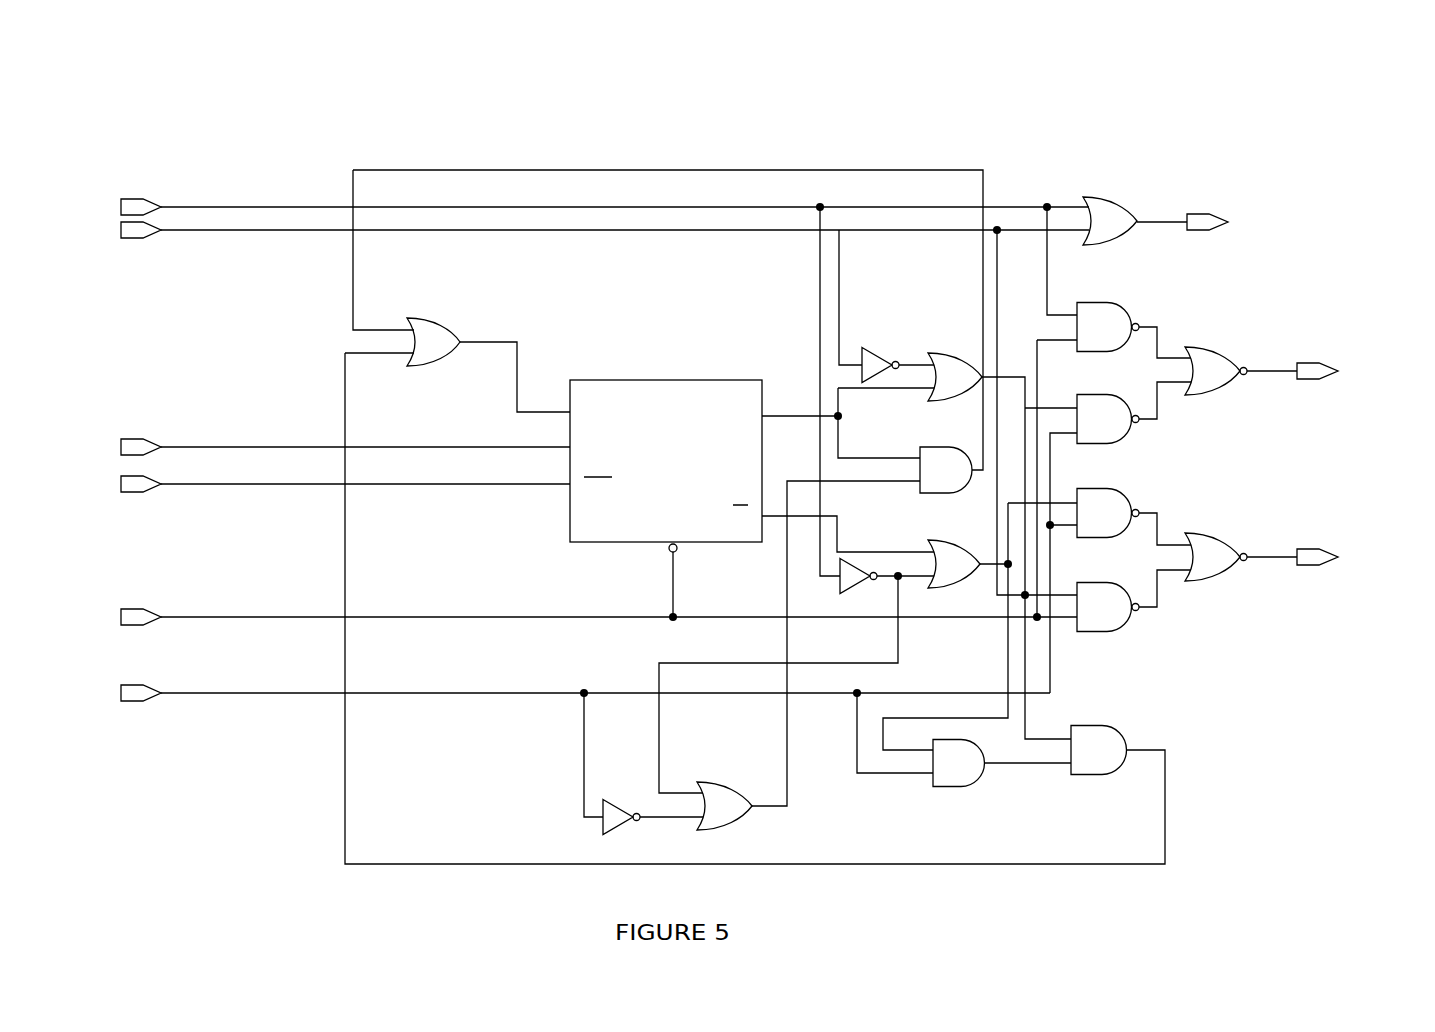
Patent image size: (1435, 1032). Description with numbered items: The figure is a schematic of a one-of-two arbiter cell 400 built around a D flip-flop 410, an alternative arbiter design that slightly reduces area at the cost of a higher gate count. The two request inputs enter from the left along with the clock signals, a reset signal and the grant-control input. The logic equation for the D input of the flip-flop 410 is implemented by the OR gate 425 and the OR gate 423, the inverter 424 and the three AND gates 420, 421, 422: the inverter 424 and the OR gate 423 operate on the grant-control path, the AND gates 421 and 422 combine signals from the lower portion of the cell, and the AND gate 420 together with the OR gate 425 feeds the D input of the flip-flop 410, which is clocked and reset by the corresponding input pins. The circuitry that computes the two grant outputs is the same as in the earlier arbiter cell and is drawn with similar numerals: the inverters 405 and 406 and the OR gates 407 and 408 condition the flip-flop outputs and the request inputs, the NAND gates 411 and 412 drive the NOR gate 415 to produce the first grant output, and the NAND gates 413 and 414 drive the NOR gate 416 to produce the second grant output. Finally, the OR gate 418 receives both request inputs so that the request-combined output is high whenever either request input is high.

The one-of-two arbiter cell 400 is at (936, 87).
The inverter 405 is at (861, 350).
The inverter 406 is at (845, 582).
The OR gate 407 is at (953, 365).
The OR gate 408 is at (934, 547).
The D flip-flop 410 is at (652, 494).
The NAND gate 411 is at (1103, 313).
The NAND gate 412 is at (1108, 428).
The NAND gate 413 is at (1113, 505).
The NAND gate 414 is at (1113, 612).
The NOR gate 415 is at (1217, 367).
The NOR gate 416 is at (1215, 568).
The OR gate 418 is at (1103, 203).
The AND gate 420 is at (947, 455).
The AND gate 421 is at (1097, 760).
The AND gate 422 is at (968, 777).
The OR gate 423 is at (719, 787).
The inverter 424 is at (622, 810).
The OR gate 425 is at (432, 340).